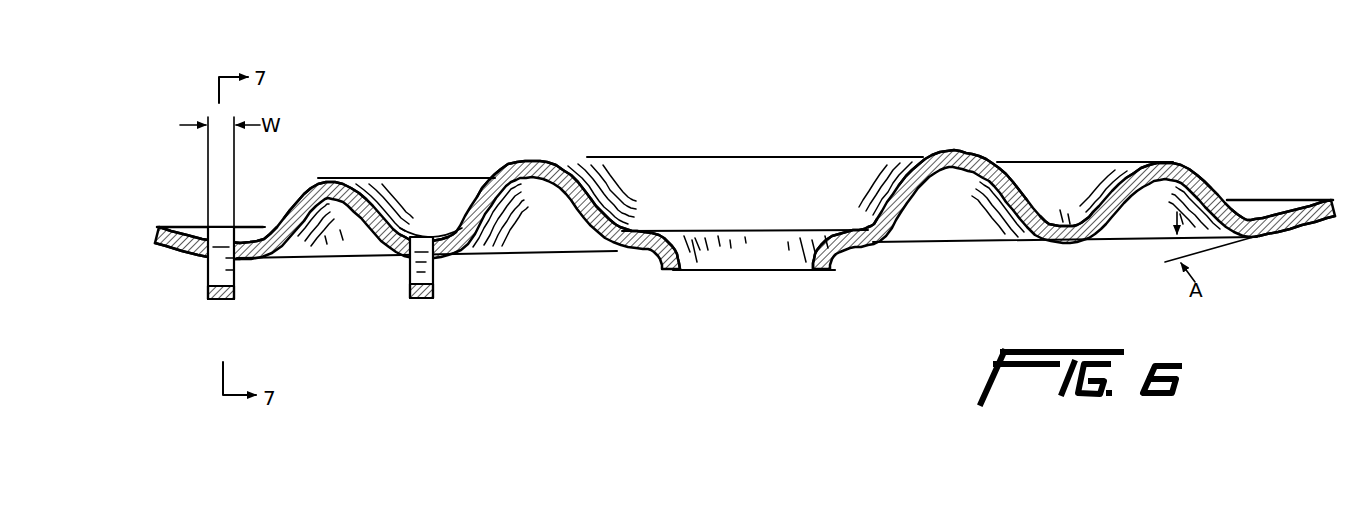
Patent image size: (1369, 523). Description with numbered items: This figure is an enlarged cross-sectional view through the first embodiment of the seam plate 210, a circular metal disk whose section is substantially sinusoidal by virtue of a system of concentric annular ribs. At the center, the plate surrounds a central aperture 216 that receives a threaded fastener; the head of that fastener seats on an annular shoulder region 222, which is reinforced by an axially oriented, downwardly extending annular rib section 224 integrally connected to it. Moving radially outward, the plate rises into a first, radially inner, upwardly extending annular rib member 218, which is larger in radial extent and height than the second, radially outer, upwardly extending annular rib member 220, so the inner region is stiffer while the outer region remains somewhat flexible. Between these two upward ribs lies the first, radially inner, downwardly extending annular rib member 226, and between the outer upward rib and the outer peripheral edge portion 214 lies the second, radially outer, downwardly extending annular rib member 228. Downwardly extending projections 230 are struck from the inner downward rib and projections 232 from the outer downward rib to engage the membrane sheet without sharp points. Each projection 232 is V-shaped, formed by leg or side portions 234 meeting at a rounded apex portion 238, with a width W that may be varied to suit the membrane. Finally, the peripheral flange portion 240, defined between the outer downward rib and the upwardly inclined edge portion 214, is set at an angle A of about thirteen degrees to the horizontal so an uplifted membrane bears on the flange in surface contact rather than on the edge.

The seam plate 210 is at (793, 138).
The outer peripheral edge portion 214 is at (157, 240).
The central aperture 216 is at (728, 270).
The first, radially inner, upwardly extending annular rib member 218 is at (585, 160).
The second, radially outer, upwardly extending annular rib member 220 is at (318, 178).
The annular shoulder region 222 is at (653, 232).
The downwardly extending annular rib section 224 is at (803, 268).
The first, radially inner, downwardly extending annular rib member 226 is at (447, 262).
The second, radially outer, downwardly extending annular rib member 228 is at (240, 260).
The downwardly extending projections 230 is at (422, 298).
The downwardly extending projections 232 is at (228, 300).
The leg or side portion 234 is at (223, 258).
The apex portion 238 is at (219, 302).
The peripheral flange portion 240 is at (173, 257).